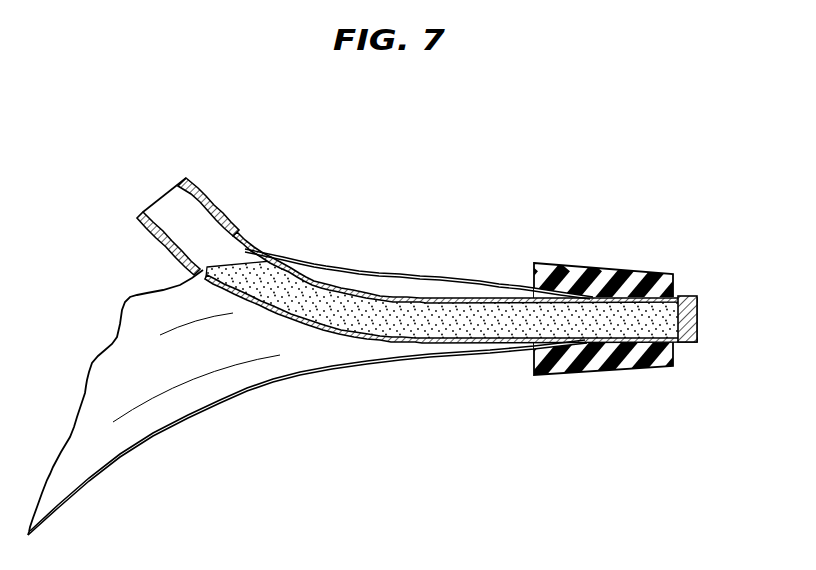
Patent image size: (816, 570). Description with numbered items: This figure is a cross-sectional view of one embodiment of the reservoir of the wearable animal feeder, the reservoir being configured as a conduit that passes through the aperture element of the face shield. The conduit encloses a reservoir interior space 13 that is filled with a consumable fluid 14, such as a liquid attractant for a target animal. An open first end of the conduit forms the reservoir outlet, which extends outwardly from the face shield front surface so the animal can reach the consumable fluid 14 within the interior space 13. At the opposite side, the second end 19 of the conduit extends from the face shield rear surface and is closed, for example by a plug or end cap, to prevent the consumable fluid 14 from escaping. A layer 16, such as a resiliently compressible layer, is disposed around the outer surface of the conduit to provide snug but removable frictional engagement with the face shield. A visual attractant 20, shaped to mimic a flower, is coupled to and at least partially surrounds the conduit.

The consumable fluid 14 is at (230, 268).
The reservoir interior space 13 is at (543, 330).
The layer 16 is at (617, 269).
The second end 19 is at (700, 313).
The visual attractant 20 is at (137, 380).